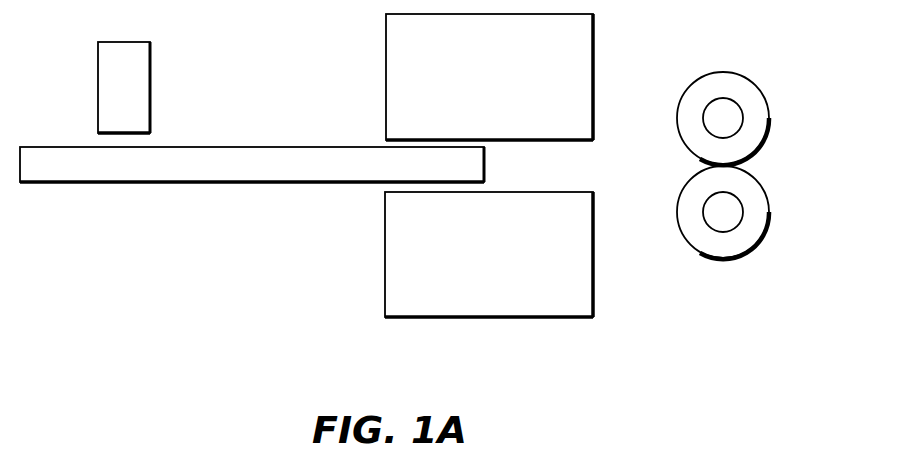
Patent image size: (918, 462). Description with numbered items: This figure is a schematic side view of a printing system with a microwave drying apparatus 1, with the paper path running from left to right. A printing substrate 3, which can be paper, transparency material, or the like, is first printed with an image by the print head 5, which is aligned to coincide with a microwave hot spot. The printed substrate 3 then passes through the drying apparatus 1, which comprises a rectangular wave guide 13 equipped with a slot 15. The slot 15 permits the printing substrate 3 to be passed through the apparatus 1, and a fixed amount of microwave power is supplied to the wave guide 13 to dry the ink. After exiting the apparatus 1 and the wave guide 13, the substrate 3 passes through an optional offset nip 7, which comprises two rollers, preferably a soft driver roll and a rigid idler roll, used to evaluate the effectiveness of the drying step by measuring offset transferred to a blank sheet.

The microwave drying apparatus 1 is at (634, 284).
The printing substrate 3 is at (182, 184).
The print head 5 is at (98, 87).
The offset nip 7 is at (752, 166).
The rectangular wave guide 13 is at (594, 92).
The slot 15 is at (384, 147).